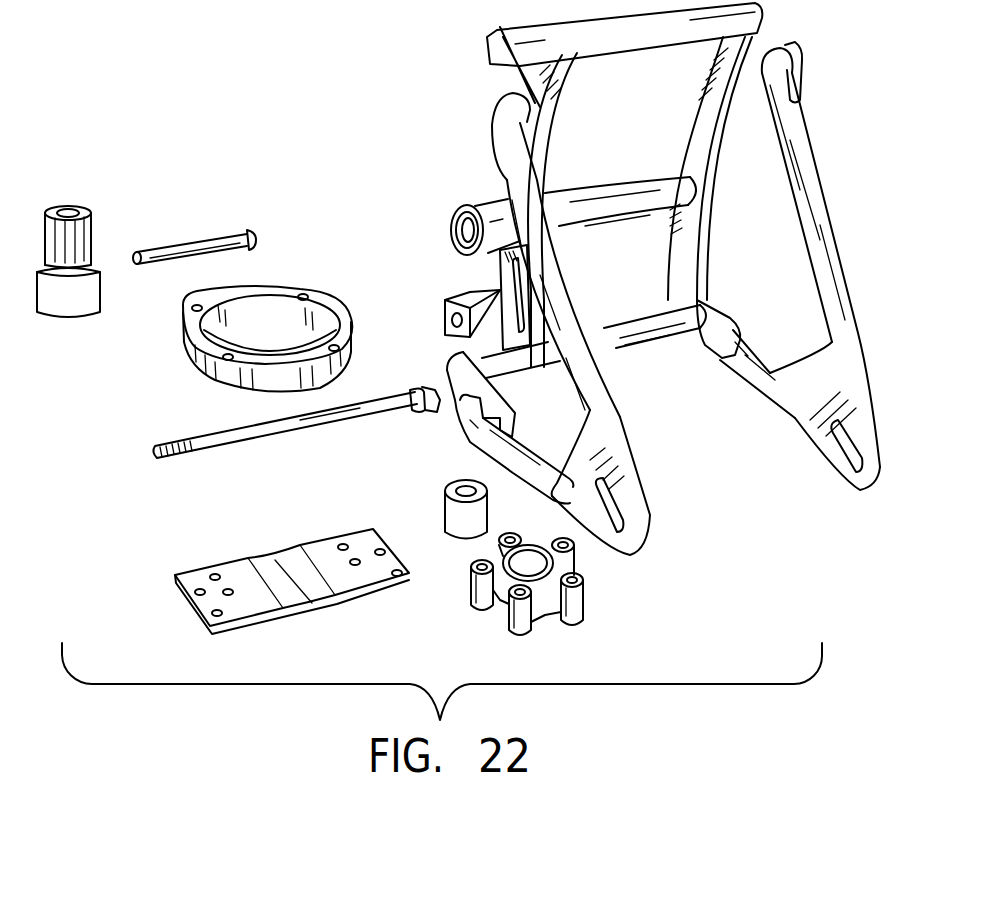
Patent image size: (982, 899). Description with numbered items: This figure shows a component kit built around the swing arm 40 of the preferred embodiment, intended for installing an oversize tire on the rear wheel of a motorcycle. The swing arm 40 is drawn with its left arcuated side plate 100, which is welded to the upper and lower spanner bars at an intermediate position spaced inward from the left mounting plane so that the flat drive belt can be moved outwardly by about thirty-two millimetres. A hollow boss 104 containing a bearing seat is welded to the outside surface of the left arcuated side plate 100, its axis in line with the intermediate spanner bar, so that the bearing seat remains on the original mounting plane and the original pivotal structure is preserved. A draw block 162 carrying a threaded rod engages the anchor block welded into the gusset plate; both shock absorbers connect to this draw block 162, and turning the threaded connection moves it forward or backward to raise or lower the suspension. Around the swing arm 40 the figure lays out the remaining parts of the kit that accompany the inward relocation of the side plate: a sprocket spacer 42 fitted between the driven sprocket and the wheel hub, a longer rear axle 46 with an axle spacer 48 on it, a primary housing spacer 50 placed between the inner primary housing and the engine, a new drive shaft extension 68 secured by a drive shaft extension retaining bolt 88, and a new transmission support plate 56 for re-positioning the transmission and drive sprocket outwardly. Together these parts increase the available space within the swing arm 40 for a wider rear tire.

The swing arm 40 is at (388, 88).
The left arcuated side plate 100 is at (558, 100).
The hollow boss 104 is at (478, 205).
The draw block 162 is at (456, 297).
The drive shaft extension 68 is at (90, 215).
The drive shaft extension retaining bolt 88 is at (195, 245).
The primary housing spacer 50 is at (298, 290).
The longer rear axle 46 is at (293, 435).
The axle spacer 48 is at (443, 505).
The transmission support plate 56 is at (215, 560).
The sprocket spacer 42 is at (585, 612).